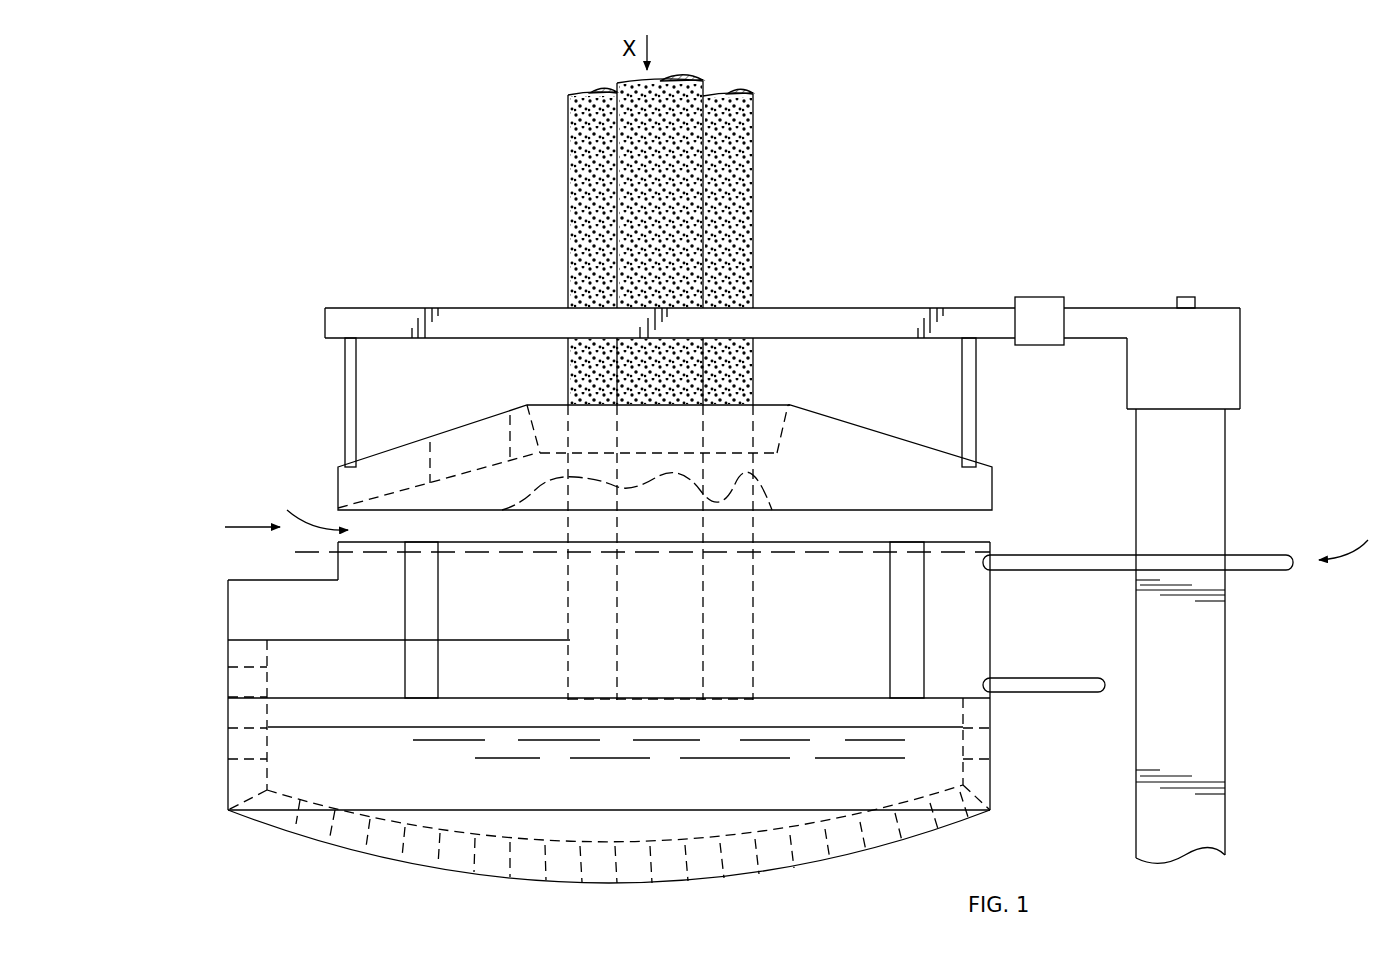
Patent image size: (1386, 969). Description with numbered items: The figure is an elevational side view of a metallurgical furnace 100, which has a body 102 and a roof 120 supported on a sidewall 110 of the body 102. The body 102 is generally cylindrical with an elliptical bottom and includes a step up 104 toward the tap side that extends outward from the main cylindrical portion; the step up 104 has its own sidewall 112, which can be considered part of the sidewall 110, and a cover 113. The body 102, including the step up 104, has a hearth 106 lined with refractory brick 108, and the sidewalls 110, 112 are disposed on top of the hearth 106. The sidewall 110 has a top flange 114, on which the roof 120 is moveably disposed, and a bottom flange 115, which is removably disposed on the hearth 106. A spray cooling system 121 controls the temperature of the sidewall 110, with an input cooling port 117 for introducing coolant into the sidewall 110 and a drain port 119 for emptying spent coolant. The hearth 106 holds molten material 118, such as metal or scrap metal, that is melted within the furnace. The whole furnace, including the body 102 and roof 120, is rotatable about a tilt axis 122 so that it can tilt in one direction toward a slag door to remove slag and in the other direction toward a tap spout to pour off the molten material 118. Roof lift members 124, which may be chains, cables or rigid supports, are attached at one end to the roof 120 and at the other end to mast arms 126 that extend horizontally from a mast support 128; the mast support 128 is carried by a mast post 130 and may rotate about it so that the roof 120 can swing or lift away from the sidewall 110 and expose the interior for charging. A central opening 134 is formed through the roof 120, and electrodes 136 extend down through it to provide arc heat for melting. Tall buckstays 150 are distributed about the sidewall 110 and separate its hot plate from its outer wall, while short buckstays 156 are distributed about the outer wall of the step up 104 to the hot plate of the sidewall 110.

The metallurgical furnace 100 is at (256, 289).
The body 102 is at (990, 786).
The step up 104 is at (243, 628).
The hearth 106 is at (990, 722).
The refractory brick 108 is at (548, 870).
The sidewall 110 is at (338, 560).
The sidewall 112 is at (228, 607).
The cover 113 is at (243, 580).
The top flange 114 is at (286, 508).
The bottom flange 115 is at (825, 698).
The input cooling port 117 is at (1293, 563).
The molten material 118 is at (697, 791).
The drain port 119 is at (1085, 678).
The roof 120 is at (411, 438).
The spray cooling system 121 is at (1352, 537).
The tilt axis 122 is at (490, 554).
The roof lift members 124 is at (345, 400).
The mast arms 126 is at (845, 318).
The mast support 128 is at (1112, 308).
The mast post 130 is at (1192, 297).
The central opening 134 is at (760, 418).
The electrodes 136 is at (548, 112).
The tall buckstays 150 is at (905, 610).
The short buckstays 156 is at (422, 666).